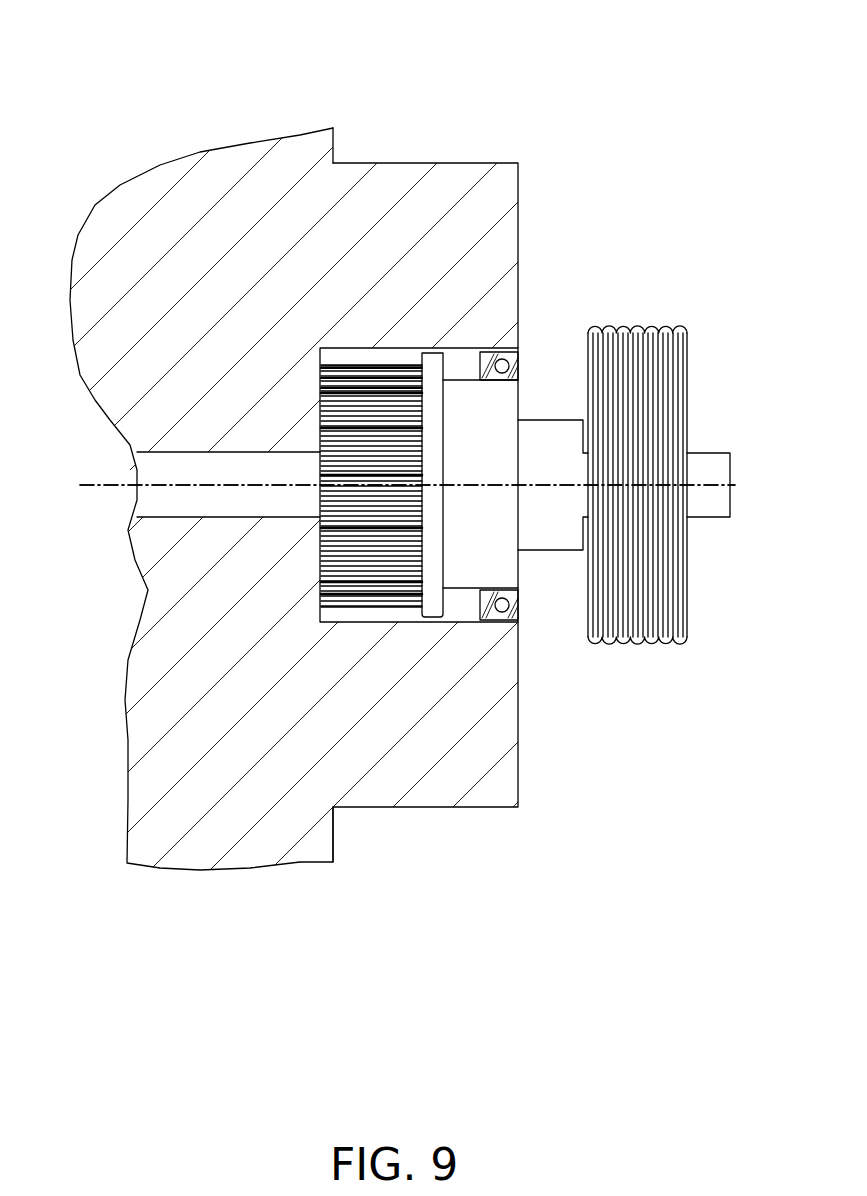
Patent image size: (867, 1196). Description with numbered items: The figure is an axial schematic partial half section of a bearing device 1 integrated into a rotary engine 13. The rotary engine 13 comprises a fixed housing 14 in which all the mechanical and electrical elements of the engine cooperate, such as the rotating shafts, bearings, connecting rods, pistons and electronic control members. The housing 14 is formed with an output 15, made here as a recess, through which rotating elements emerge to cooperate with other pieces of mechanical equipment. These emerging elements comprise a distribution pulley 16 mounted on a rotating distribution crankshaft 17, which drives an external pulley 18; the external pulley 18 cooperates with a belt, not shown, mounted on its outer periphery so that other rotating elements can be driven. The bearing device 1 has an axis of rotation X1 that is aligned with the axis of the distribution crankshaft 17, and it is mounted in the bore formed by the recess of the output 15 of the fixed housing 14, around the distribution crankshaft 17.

The bearing device 1 is at (524, 352).
The rotary engine 13 is at (292, 118).
The fixed housing 14 is at (455, 163).
The output 15 is at (386, 612).
The distribution pulley 16 is at (385, 370).
The distribution crankshaft 17 is at (557, 532).
The external pulley 18 is at (688, 625).
The axis of rotation X1 is at (376, 504).